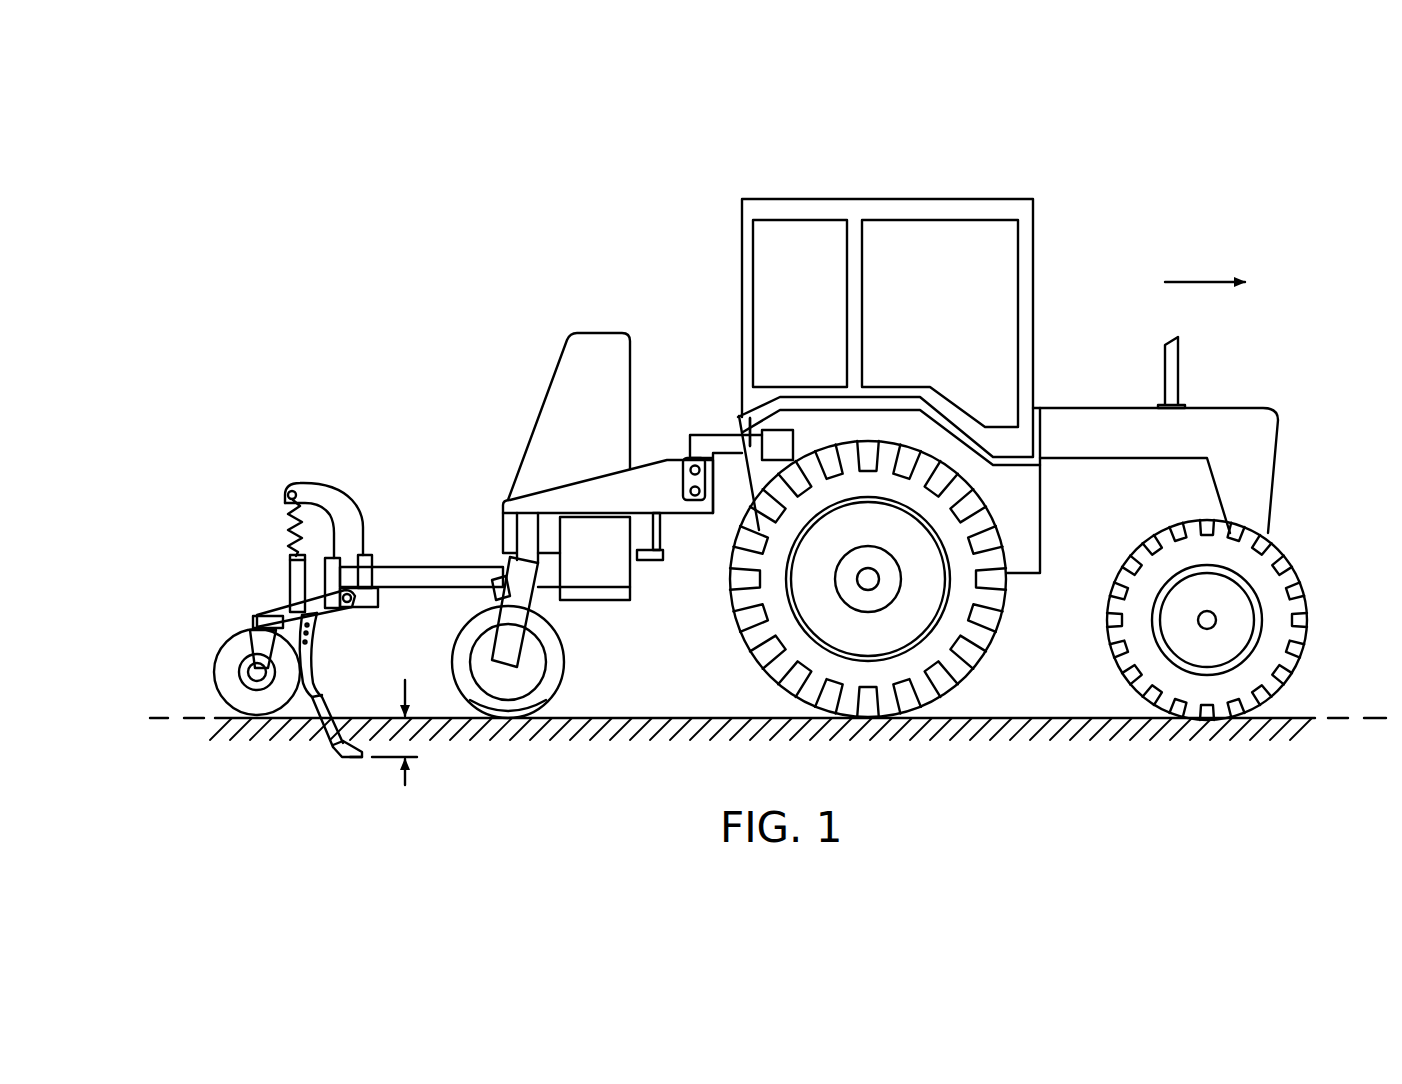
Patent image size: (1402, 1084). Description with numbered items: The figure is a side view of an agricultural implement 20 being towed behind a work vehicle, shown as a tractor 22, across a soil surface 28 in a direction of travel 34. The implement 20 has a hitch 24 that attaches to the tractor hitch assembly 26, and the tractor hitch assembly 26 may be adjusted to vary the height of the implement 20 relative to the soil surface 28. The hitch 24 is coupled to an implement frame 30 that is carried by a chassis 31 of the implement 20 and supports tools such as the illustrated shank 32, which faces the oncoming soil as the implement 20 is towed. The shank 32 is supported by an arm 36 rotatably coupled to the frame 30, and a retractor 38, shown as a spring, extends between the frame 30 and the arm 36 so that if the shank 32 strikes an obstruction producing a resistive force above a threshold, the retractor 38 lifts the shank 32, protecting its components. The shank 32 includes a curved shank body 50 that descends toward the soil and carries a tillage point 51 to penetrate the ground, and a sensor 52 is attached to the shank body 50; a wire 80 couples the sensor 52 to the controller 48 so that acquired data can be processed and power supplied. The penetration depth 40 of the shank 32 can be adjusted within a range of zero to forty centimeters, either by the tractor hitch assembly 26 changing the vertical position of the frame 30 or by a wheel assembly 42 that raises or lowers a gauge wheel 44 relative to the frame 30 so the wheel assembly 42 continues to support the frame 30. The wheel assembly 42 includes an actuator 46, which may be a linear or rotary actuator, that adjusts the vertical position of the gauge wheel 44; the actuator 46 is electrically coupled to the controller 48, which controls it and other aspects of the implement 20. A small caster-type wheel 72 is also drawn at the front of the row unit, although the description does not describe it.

The agricultural implement 20 is at (430, 388).
The tractor 22 is at (1053, 190).
The hitch 24 is at (687, 483).
The tractor hitch assembly 26 is at (720, 435).
The soil surface 28 is at (1305, 716).
The implement frame 30 is at (330, 505).
The chassis 31 is at (598, 477).
The shank 32 is at (264, 588).
The direction of travel 34 is at (1198, 280).
The arm 36 is at (338, 610).
The retractor 38 is at (292, 530).
The penetration depth 40 is at (407, 782).
The wheel assembly 42 is at (565, 695).
The gauge wheel 44 is at (558, 642).
The actuator 46 is at (492, 592).
The controller 48 is at (793, 442).
The shank body 50 is at (313, 668).
The tillage point 51 is at (362, 758).
The sensor 52 is at (330, 761).
The caster wheel 72 is at (216, 672).
The wire 80 is at (750, 446).